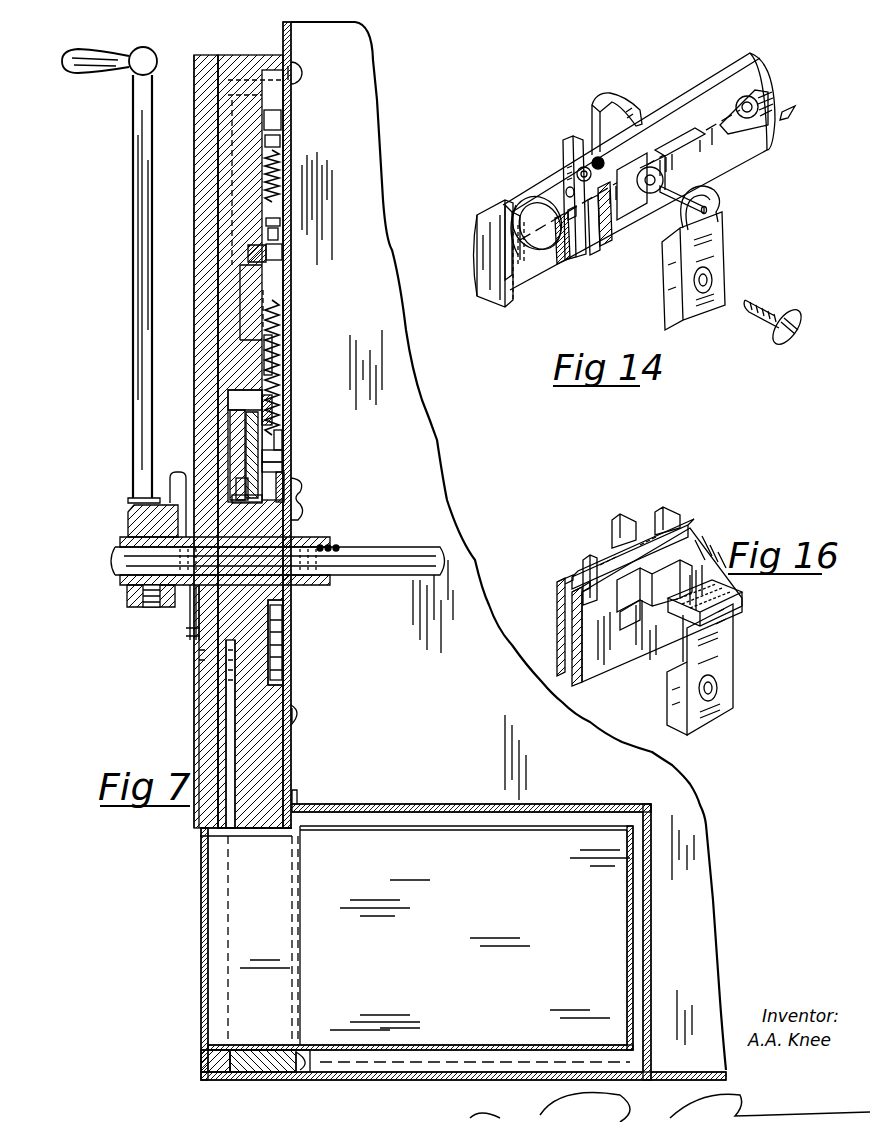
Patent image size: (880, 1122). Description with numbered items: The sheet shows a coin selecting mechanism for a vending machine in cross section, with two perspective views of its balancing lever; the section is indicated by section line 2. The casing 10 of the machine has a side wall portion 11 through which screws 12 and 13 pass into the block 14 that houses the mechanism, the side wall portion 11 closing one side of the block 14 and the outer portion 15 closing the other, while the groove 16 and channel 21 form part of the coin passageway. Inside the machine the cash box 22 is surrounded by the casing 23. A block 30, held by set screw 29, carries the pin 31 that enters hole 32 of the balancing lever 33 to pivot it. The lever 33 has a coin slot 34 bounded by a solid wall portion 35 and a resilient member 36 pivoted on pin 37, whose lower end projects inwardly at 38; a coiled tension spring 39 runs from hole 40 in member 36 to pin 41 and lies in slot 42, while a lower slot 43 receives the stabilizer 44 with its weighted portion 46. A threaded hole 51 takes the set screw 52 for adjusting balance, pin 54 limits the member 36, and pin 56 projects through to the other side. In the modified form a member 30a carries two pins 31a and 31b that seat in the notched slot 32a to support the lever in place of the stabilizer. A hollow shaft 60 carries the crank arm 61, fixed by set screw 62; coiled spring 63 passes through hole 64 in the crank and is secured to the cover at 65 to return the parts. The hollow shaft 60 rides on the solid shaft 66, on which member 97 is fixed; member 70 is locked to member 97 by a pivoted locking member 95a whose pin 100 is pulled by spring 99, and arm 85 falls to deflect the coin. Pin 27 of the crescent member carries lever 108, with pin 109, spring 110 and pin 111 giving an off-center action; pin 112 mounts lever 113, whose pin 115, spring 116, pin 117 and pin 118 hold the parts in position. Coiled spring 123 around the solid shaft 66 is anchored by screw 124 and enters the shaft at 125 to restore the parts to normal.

In FIG. 7, the section line 2 is at (388, 55).
In FIG. 7, the casing 10 is at (405, 412).
In FIG. 7, the side wall portion 11 is at (292, 430).
In FIG. 7, the screw 12 is at (300, 73).
In FIG. 7, the screw 13 is at (300, 722).
In FIG. 7, the block 14 is at (254, 58).
In FIG. 7, the outer portion (cover) 15 is at (200, 57).
In FIG. 7, the groove 16 is at (210, 162).
In FIG. 7, the channel 21 is at (205, 812).
In FIG. 7, the cash box 22 is at (417, 949).
In FIG. 7, the casing 23 is at (466, 804).
In FIG. 7, the pin 27 is at (215, 302).
In FIG. 14, the set screw 29 is at (784, 320).
In FIG. 7, the block 30 is at (236, 432).
In FIG. 14, the block 30 is at (720, 254).
In FIG. 16, the member 30a is at (722, 702).
In FIG. 14, the pin 31 is at (666, 192).
In FIG. 16, the pin 31a is at (662, 642).
In FIG. 16, the pin 31b is at (732, 598).
In FIG. 14, the hole 32 is at (650, 176).
In FIG. 16, the slot 32a is at (690, 548).
In FIG. 7, the balancing lever 33 is at (232, 422).
In FIG. 14, the balancing lever 33 is at (514, 202).
In FIG. 16, the balancing lever 33 is at (558, 604).
In FIG. 14, the slot 34 is at (503, 205).
In FIG. 16, the slot 34 is at (582, 582).
In FIG. 14, the solid wall portion 35 is at (484, 228).
In FIG. 14, the resilient member 36 is at (566, 176).
In FIG. 14, the pin 37 is at (554, 218).
In FIG. 14, the inwardly projecting portion 38 is at (562, 258).
In FIG. 14, the coiled tension spring 39 is at (590, 150).
In FIG. 14, the hole 40 is at (584, 166).
In FIG. 14, the pin 41 is at (672, 140).
In FIG. 7, the slot 42 is at (222, 402).
In FIG. 7, the slot 43 is at (218, 504).
In FIG. 7, the elongated member (stabilizer) 44 is at (232, 490).
In FIG. 14, the elongated member (stabilizer) 44 is at (612, 238).
In FIG. 14, the weighted portion 46 is at (796, 120).
In FIG. 14, the hole 51 is at (745, 120).
In FIG. 16, the hole 51 is at (600, 556).
In FIG. 14, the set screw 52 is at (626, 120).
In FIG. 14, the portion (pin) 54 is at (612, 100).
In FIG. 16, the portion (pin) 54 is at (612, 548).
In FIG. 14, the pin 56 is at (740, 96).
In FIG. 7, the hollow shaft 60 is at (128, 522).
In FIG. 7, the crank arm 61 is at (134, 382).
In FIG. 7, the set screw 62 is at (150, 608).
In FIG. 7, the coiled spring 63 is at (192, 612).
In FIG. 7, the hole 64 is at (190, 472).
In FIG. 7, the securing point 65 is at (198, 666).
In FIG. 7, the solid shaft 66 is at (400, 548).
In FIG. 7, the member 70 is at (292, 448).
In FIG. 7, the arm 85 is at (285, 388).
In FIG. 7, the spring seat 95a is at (292, 457).
In FIG. 7, the member 97 is at (294, 612).
In FIG. 7, the coiled tension spring 99 is at (292, 464).
In FIG. 7, the pin 100 is at (292, 446).
In FIG. 7, the lever 108 is at (274, 305).
In FIG. 7, the pin 109 is at (276, 322).
In FIG. 7, the tension spring 110 is at (292, 348).
In FIG. 7, the pin 111 is at (300, 402).
In FIG. 7, the pin (screw) 112 is at (280, 255).
In FIG. 7, the lever 113 is at (300, 225).
In FIG. 7, the pin 115 is at (270, 200).
In FIG. 7, the tension spring 116 is at (283, 162).
In FIG. 7, the pin 117 is at (290, 132).
In FIG. 7, the pin 118 is at (282, 228).
In FIG. 7, the coiled spring 123 is at (300, 522).
In FIG. 7, the screw 124 is at (300, 480).
In FIG. 7, the penetration point 125 is at (320, 549).